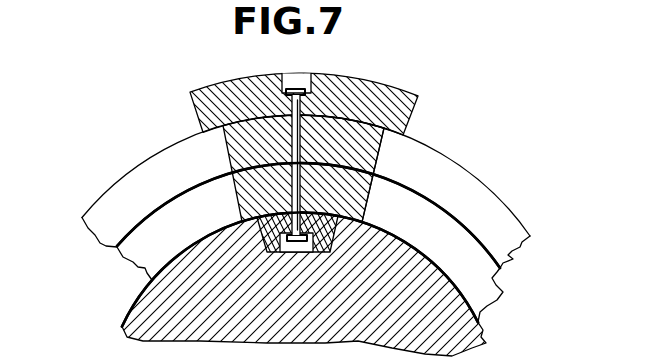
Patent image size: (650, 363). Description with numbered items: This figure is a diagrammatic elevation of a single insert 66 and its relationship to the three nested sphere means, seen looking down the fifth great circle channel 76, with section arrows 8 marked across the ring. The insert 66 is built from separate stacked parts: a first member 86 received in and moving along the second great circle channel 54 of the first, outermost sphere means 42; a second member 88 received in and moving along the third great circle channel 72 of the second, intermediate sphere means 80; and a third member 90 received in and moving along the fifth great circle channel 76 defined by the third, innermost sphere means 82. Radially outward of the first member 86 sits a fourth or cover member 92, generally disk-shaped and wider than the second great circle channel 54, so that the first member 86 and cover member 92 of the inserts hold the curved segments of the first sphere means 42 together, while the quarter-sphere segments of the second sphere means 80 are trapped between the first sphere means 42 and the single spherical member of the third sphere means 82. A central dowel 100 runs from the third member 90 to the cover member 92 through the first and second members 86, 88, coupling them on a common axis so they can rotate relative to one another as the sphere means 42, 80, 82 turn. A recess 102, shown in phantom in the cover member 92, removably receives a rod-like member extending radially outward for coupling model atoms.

The section line 8- 8 is at (191, 168).
The first sphere means 42 is at (295, 218).
The second great circle channel 54 is at (183, 182).
The insert 66 is at (305, 82).
The third great circle channel 72 is at (450, 273).
The fifth great circle channel 76 is at (334, 245).
The second sphere means 80 is at (496, 280).
The third sphere means 82 is at (453, 321).
The first member 86 is at (378, 153).
The second member 88 is at (236, 197).
The third member 90 is at (263, 242).
The cover member 92 is at (203, 104).
The central dowel 100 is at (364, 84).
The recess 102 is at (298, 73).